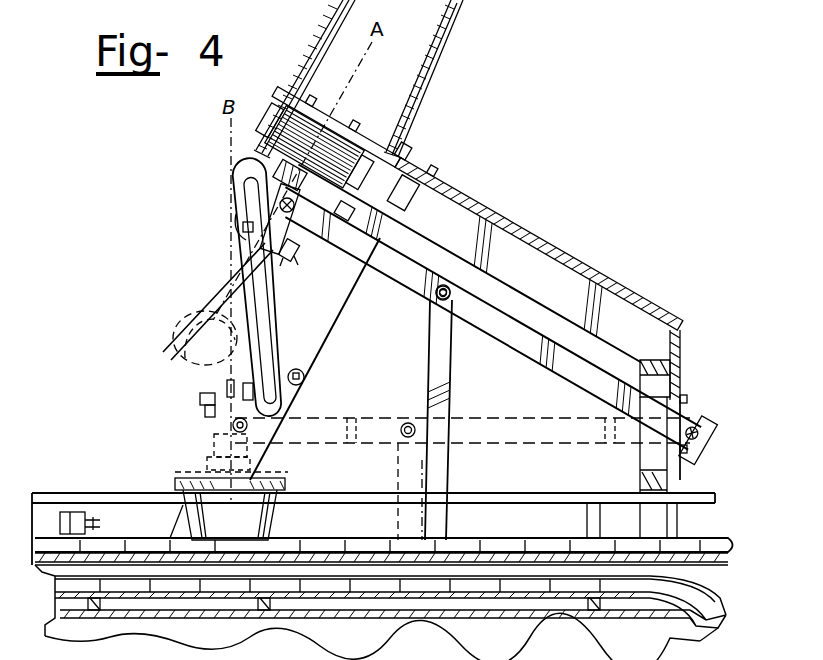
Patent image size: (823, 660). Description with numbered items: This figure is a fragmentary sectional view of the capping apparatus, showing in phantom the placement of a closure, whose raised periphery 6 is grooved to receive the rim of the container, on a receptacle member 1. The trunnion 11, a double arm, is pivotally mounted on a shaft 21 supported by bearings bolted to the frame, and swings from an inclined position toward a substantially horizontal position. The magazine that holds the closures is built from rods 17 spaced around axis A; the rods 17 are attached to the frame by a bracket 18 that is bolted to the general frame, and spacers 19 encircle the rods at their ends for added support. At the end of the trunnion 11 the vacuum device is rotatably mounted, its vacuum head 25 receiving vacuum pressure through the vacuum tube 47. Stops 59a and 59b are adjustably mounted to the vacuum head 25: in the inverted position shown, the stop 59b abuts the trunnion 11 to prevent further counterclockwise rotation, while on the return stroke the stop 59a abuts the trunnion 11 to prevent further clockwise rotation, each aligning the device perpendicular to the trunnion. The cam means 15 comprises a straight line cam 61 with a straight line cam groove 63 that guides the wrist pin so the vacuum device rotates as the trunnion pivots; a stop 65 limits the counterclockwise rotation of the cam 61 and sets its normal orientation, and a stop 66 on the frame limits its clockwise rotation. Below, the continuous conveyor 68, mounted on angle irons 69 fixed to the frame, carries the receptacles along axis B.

The receptacle member 1 is at (281, 521).
The raised periphery 6 is at (337, 97).
The trunnion 11 is at (520, 333).
The cam means 15 is at (218, 273).
The rods 17 is at (428, 74).
The bracket 18 is at (378, 140).
The spacers 19 is at (262, 142).
The shaft 21 is at (706, 430).
The vacuum head 25 is at (250, 238).
The vacuum tube 47 is at (165, 358).
The stop 59a is at (244, 224).
The stop 59b is at (290, 252).
The straight line cam 61 is at (241, 195).
The straight line cam groove 63 is at (245, 166).
The stop 65 is at (305, 378).
The stop 66 is at (232, 426).
The continuous conveyor 68 is at (705, 546).
The angle irons 69 is at (742, 565).